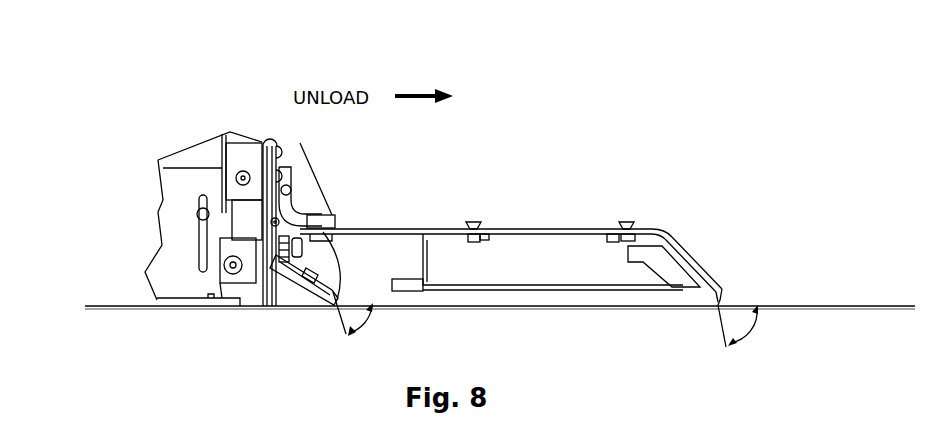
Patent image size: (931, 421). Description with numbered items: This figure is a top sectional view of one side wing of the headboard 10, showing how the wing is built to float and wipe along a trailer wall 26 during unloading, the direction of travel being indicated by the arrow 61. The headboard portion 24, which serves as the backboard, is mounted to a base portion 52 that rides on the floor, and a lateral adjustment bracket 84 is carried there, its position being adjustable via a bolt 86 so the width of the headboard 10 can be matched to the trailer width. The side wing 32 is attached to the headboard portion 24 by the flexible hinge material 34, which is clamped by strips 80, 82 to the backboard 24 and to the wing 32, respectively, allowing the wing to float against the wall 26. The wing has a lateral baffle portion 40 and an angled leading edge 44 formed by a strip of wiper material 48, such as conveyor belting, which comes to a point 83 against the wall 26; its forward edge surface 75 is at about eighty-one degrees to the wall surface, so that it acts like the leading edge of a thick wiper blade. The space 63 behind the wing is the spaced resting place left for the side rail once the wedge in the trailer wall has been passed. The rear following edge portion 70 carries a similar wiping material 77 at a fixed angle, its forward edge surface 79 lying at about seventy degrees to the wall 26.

The headboard 10 is at (209, 116).
The headboard portion 24 is at (297, 148).
The trailer lateral wall 26 is at (530, 300).
The side wing 32 is at (550, 218).
The hinge structure 34 is at (295, 205).
The lateral baffle portion 40 is at (442, 229).
The leading edge 44 is at (676, 254).
The strip of wiper material 48 is at (722, 305).
The base portion 52 is at (185, 148).
The arrow indicating direction of travel 61 is at (429, 39).
The space 63 is at (473, 299).
The rear following edge portion 70 is at (289, 294).
The forward edge surface 75 is at (722, 293).
The wiping material 77 is at (303, 292).
The forward edge surface of rear portion 79 is at (335, 280).
The clamping strip 80 is at (300, 172).
The clamping strip 82 is at (322, 228).
The point 83 is at (717, 308).
The lateral adjustment bracket 84 is at (164, 257).
The bolt 86 is at (200, 213).